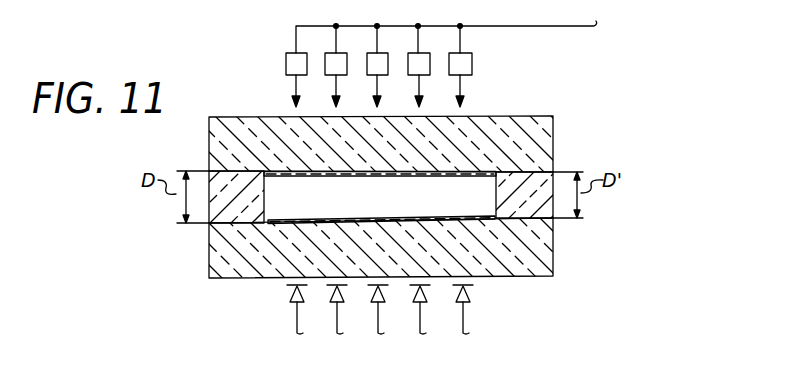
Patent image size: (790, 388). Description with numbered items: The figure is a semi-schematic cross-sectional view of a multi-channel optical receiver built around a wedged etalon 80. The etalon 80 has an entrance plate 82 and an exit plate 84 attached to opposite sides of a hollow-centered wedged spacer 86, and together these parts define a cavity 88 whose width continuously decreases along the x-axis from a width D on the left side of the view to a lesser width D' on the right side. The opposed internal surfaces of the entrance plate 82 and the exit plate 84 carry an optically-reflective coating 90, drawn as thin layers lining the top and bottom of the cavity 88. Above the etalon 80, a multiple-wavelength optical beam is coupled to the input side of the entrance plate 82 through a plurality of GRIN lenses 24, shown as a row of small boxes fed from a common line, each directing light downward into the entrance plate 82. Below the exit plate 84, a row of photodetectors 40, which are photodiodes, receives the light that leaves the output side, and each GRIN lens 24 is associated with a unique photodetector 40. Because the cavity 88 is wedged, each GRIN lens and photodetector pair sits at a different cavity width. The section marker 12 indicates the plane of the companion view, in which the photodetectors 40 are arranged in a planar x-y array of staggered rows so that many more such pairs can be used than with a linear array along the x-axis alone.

The section line for FIG. 12 is at (175, 198).
The GRIN lenses 24 is at (286, 60).
The photodetectors 40 is at (290, 292).
The etalon 80 is at (379, 194).
The entrance plate 82 is at (209, 146).
The exit plate 84 is at (553, 262).
The hollow-centered wedged spacer 86 is at (219, 212).
The cavity 88 is at (398, 211).
The optically-reflective coating 90 is at (463, 174).